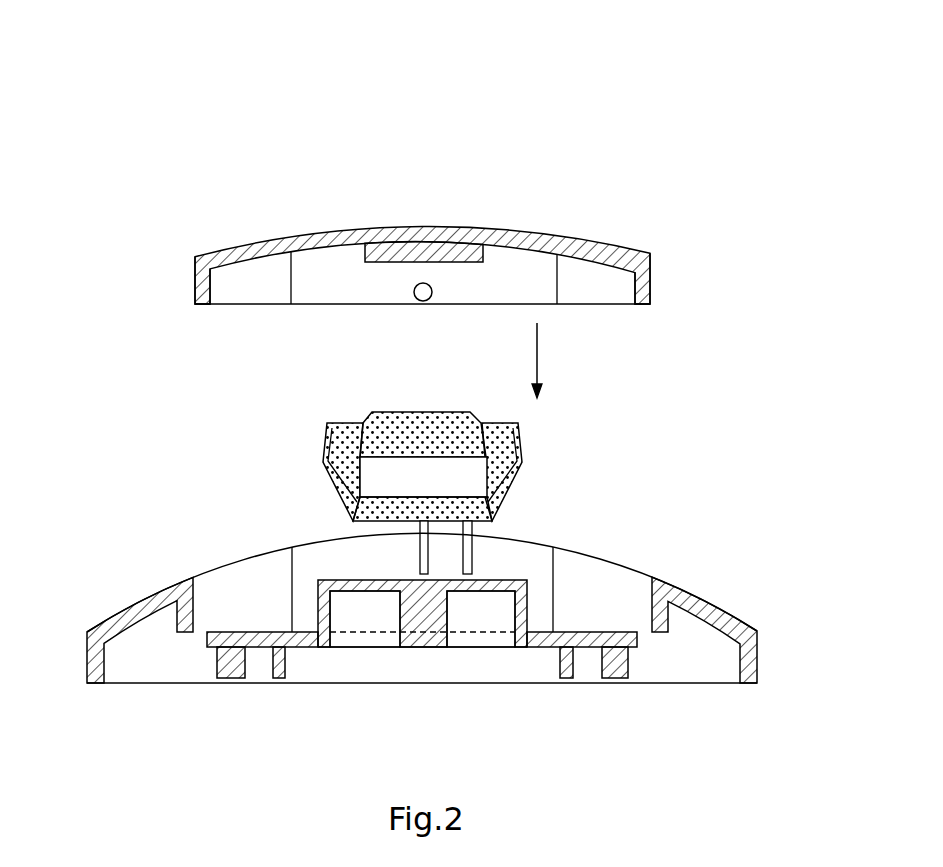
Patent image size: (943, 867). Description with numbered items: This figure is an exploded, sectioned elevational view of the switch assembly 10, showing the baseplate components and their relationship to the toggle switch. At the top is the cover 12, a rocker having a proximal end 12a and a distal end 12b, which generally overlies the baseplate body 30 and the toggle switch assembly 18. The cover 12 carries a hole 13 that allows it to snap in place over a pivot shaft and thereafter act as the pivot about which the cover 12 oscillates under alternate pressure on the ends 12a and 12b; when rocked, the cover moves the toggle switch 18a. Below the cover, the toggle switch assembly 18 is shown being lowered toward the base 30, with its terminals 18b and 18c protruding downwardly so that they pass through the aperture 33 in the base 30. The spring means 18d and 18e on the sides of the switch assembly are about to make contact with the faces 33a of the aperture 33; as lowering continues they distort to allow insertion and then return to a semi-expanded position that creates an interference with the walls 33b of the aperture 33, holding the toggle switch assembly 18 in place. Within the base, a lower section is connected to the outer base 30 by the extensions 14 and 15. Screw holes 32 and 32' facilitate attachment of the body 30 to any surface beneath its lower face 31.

The switch assembly 10 is at (726, 97).
The cover 12 is at (416, 274).
The proximal end 12a is at (652, 264).
The distal end 12b is at (195, 288).
The hole 13 is at (432, 289).
The extension 14 is at (358, 635).
The extension 15 is at (483, 633).
The toggle switch assembly 18 is at (428, 553).
The toggle switch 18a is at (407, 413).
The toggle switch terminal 18b is at (466, 557).
The toggle switch terminal 18c is at (423, 548).
The spring means 18d is at (325, 468).
The spring means 18e is at (518, 468).
The baseplate body 30 is at (447, 650).
The lower face 31 is at (700, 685).
The screw hole 32 is at (558, 698).
The screw hole 32' is at (237, 683).
The aperture 33 is at (392, 621).
The faces of aperture 33a is at (540, 560).
The walls of aperture 33b is at (330, 612).